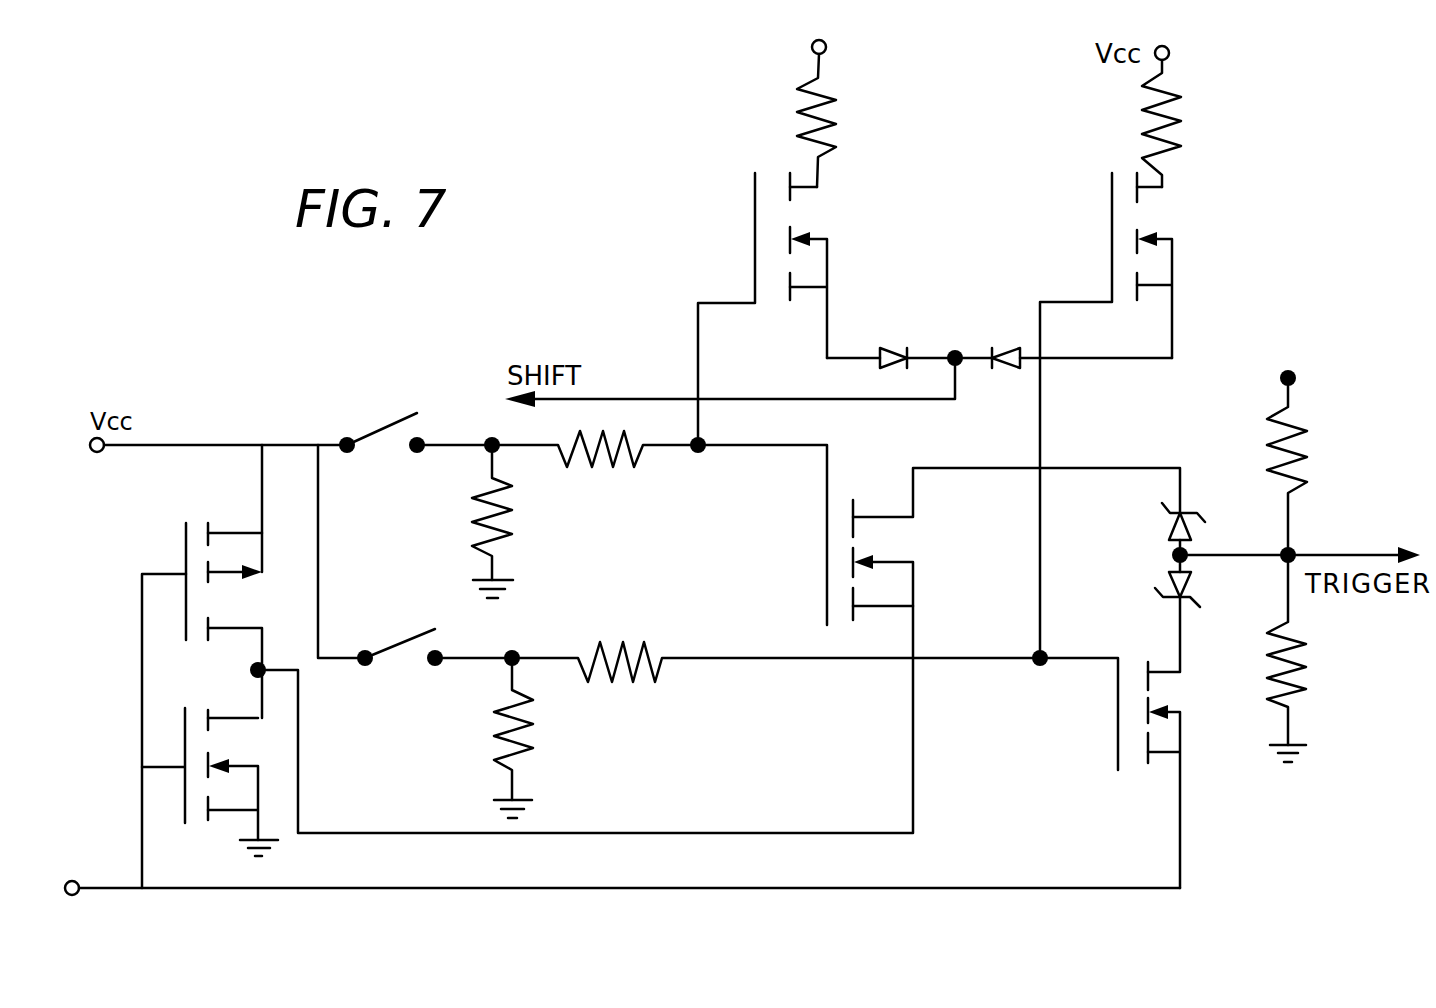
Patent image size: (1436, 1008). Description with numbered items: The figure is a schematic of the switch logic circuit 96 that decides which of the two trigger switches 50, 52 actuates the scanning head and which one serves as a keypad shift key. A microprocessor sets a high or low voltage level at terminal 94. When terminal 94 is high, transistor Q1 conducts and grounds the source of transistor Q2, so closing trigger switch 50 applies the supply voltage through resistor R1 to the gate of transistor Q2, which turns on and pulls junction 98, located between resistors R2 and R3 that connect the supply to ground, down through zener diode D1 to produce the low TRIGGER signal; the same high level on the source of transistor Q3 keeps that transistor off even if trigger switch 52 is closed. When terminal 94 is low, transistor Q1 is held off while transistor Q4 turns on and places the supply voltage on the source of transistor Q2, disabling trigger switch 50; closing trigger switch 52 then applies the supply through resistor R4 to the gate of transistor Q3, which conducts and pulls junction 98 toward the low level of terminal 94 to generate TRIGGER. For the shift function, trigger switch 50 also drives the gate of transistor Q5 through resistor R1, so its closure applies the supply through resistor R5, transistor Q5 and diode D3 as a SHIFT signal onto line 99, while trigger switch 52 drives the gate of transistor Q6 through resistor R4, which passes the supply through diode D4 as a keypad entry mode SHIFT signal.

The trigger switch 50 is at (383, 432).
The trigger switch 52 is at (422, 633).
The terminal 94 is at (72, 880).
The switch logic circuit 96 is at (228, 904).
The junction 98 is at (1170, 556).
The line 99 is at (667, 397).
The transistor Q1 is at (260, 755).
The transistor Q2 is at (888, 540).
The transistor Q3 is at (1118, 731).
The transistor Q4 is at (243, 600).
The transistor Q5 is at (816, 212).
The transistor Q6 is at (1137, 220).
The resistor R1 is at (568, 433).
The resistor R2 is at (1303, 455).
The resistor R3 is at (1300, 687).
The resistor R4 is at (631, 645).
The resistor R5 is at (825, 103).
The zener diode D1 is at (1168, 522).
The diode D3 is at (888, 353).
The diode D4 is at (1005, 352).